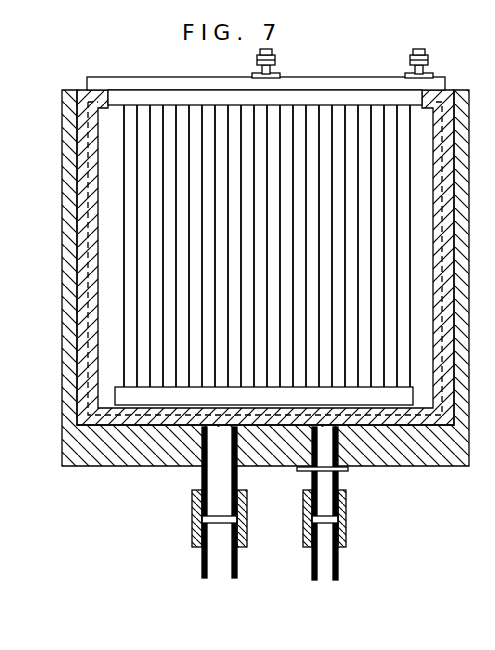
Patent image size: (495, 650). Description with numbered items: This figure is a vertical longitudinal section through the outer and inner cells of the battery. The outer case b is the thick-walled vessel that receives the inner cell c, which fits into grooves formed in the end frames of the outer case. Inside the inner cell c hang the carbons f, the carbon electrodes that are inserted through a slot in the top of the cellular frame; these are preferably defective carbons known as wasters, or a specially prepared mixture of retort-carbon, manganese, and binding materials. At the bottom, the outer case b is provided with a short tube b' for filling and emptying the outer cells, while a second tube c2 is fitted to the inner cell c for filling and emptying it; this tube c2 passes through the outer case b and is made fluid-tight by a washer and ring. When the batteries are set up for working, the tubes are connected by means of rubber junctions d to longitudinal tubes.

The outer case b is at (264, 278).
The inner cell c is at (265, 257).
The carbons f is at (273, 229).
The short tube b' is at (219, 502).
The tube c2 is at (322, 503).
The rubber junctions d is at (194, 511).